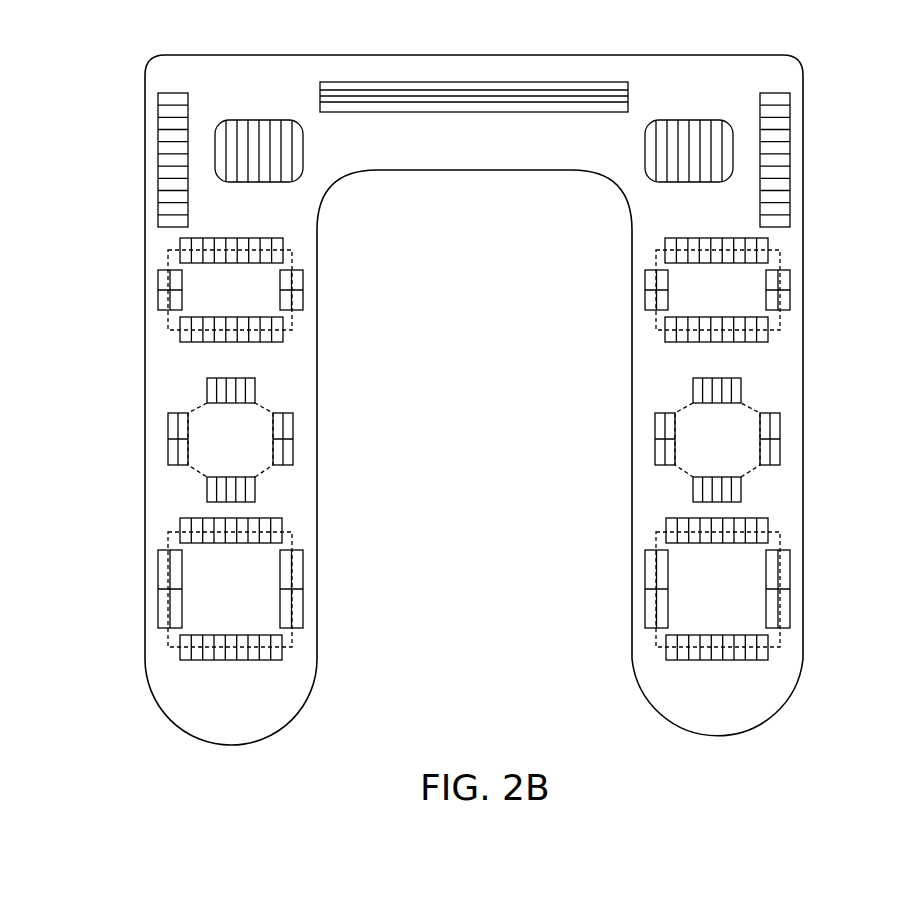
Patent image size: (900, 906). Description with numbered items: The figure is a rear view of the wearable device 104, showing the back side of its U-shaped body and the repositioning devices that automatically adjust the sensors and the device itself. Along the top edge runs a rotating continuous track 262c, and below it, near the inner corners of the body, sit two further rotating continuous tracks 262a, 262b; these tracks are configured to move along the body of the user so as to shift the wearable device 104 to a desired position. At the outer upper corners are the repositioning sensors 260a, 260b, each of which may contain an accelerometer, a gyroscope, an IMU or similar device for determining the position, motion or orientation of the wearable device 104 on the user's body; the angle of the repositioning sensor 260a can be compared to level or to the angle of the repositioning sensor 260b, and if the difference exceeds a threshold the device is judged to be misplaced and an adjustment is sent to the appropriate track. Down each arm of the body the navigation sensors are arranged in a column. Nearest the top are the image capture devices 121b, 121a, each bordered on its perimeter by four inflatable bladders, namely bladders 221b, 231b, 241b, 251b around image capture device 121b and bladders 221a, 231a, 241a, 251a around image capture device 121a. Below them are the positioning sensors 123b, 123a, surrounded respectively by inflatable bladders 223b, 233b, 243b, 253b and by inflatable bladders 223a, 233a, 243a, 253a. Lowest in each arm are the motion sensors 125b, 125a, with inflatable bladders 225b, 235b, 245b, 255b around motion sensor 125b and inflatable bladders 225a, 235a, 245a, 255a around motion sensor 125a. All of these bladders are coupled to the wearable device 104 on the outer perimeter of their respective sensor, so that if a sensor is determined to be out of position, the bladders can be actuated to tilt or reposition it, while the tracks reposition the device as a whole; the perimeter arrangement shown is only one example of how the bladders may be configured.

The wearable device 104 is at (803, 78).
The rotating continuous track 262c is at (423, 82).
The rotating continuous track 262a is at (303, 140).
The rotating continuous track 262b is at (645, 140).
The repositioning sensor 260a is at (158, 160).
The repositioning sensor 260b is at (790, 160).
The image capture device 121b is at (254, 300).
The image capture device 121a is at (742, 300).
The inflatable bladder 221b is at (200, 238).
The inflatable bladder 221a is at (750, 238).
The inflatable bladder 251b is at (210, 342).
The inflatable bladder 251a is at (738, 342).
The inflatable bladder 241b is at (158, 288).
The inflatable bladder 241a is at (645, 288).
The inflatable bladder 231b is at (303, 288).
The inflatable bladder 231a is at (790, 288).
The positioning sensor 123b is at (255, 450).
The positioning sensor 123a is at (742, 450).
The inflatable bladder 223b is at (207, 392).
The inflatable bladder 223a is at (741, 392).
The inflatable bladder 253b is at (207, 490).
The inflatable bladder 253a is at (741, 490).
The inflatable bladder 243b is at (168, 432).
The inflatable bladder 243a is at (655, 432).
The inflatable bladder 233b is at (293, 432).
The inflatable bladder 233a is at (780, 432).
The motion sensor 125b is at (254, 600).
The motion sensor 125a is at (742, 600).
The inflatable bladder 225b is at (275, 520).
The inflatable bladder 225a is at (675, 520).
The inflatable bladder 255b is at (200, 660).
The inflatable bladder 255a is at (748, 660).
The inflatable bladder 245b is at (158, 578).
The inflatable bladder 245a is at (645, 578).
The inflatable bladder 235b is at (303, 578).
The inflatable bladder 235a is at (790, 578).